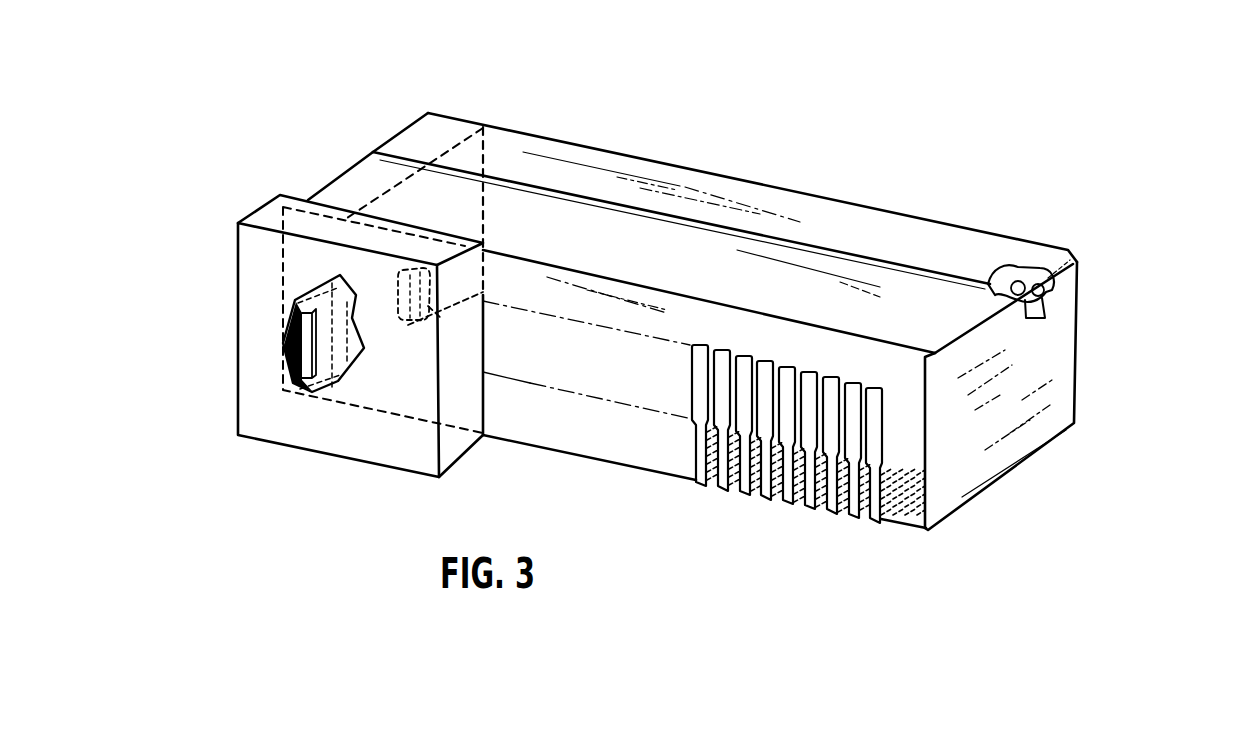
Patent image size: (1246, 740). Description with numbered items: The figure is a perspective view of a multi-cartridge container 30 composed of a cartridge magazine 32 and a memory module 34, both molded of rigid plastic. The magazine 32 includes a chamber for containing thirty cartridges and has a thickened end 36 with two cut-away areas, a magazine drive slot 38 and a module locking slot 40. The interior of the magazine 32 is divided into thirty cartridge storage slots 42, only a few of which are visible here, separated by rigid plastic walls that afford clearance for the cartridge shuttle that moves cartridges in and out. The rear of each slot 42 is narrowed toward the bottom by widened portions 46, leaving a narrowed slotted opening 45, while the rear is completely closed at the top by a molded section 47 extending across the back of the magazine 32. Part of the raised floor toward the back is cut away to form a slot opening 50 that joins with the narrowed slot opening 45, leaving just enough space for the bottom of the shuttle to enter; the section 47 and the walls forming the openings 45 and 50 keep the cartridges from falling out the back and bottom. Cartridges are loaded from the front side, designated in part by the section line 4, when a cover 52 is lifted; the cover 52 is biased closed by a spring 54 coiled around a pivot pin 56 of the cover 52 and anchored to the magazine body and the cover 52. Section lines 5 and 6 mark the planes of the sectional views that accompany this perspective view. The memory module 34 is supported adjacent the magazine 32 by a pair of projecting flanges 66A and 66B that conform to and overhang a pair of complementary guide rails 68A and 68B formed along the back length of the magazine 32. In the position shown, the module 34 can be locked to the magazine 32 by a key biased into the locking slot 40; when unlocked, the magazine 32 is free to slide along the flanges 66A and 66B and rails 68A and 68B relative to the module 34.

The multi-cartridge container 30 is at (806, 185).
The cartridge magazine 32 is at (977, 497).
The memory module 34 is at (462, 468).
The thickened end 36 is at (342, 191).
The magazine drive slot 38 is at (393, 283).
The module locking slot 40 is at (348, 316).
The cartridge storage slots 42 is at (877, 393).
The narrowed slotted opening 45 is at (698, 446).
The widened portions 46 is at (822, 514).
The molded section 47 is at (702, 323).
The slot opening 50 is at (697, 484).
The cover 52 is at (937, 223).
The spring 54 is at (1040, 320).
The pivot pin 56 is at (1025, 316).
The projecting flange 66A is at (486, 243).
The guide rail 68A is at (505, 252).
The projecting flange 66B is at (490, 437).
The guide rail 68B is at (488, 437).
The section line 4- 4 is at (1138, 311).
The section line 5- 5 is at (542, 375).
The section line 6- 6 is at (300, 340).